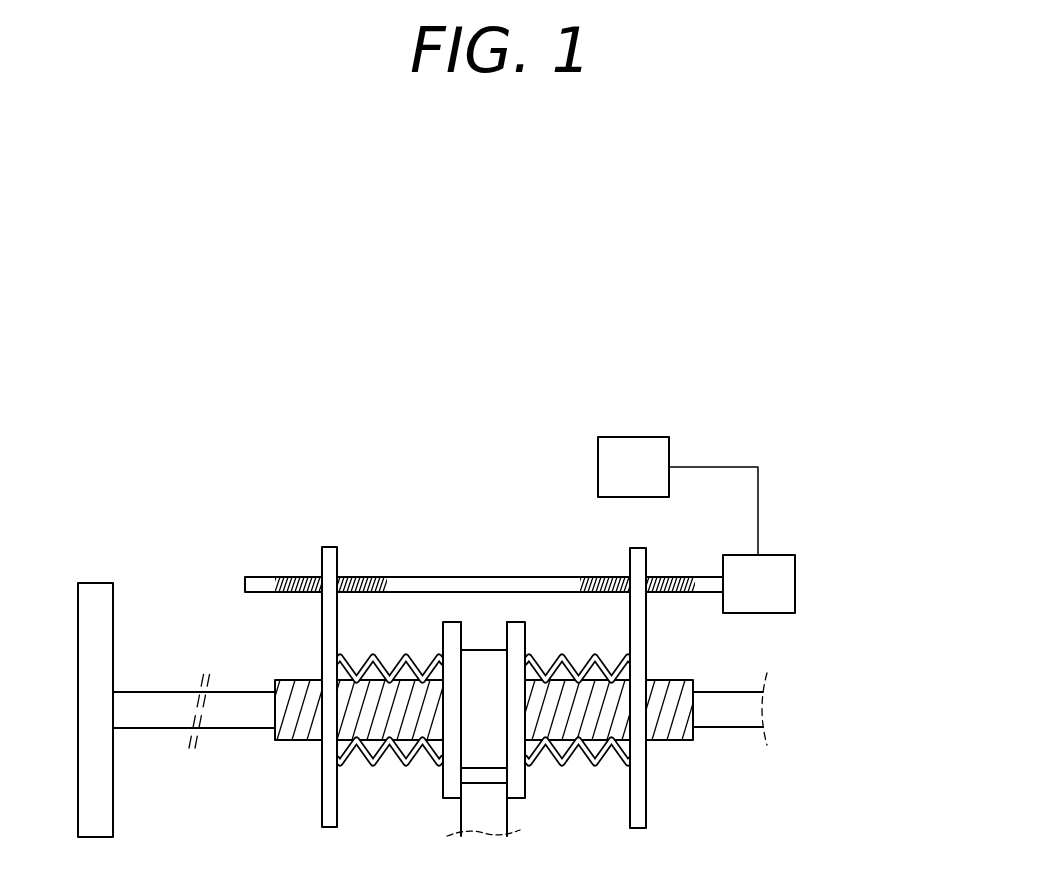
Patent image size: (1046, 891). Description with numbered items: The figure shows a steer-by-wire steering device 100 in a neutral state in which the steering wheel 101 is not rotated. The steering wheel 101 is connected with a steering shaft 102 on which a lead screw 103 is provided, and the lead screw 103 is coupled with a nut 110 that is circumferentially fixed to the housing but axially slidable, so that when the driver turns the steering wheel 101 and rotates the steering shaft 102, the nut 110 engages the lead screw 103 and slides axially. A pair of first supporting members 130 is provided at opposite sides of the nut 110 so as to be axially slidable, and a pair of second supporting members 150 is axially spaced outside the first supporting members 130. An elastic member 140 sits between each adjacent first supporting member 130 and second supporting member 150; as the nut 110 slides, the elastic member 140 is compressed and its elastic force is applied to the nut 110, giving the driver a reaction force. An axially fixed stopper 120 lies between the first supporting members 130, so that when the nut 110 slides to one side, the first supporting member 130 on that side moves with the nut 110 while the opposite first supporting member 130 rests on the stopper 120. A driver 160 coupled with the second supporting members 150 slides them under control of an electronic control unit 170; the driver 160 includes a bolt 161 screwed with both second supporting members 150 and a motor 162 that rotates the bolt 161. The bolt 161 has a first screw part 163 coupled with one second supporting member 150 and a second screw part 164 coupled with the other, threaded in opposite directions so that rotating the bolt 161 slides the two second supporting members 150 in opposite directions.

The steer-by-wire steering device 100 is at (158, 416).
The steering wheel 101 is at (96, 590).
The steering shaft 102 is at (244, 724).
The lead screw 103 is at (299, 735).
The nut 110 is at (481, 656).
The stopper 120 is at (485, 825).
The first supporting member 130 is at (452, 800).
The elastic member 140 is at (394, 765).
The second supporting member 150 is at (331, 829).
The driver 160 is at (583, 566).
The bolt 161 is at (550, 555).
The motor 162 is at (796, 584).
The first screw part 163 is at (363, 576).
The second screw part 164 is at (605, 576).
The electronic control unit 170 is at (633, 445).